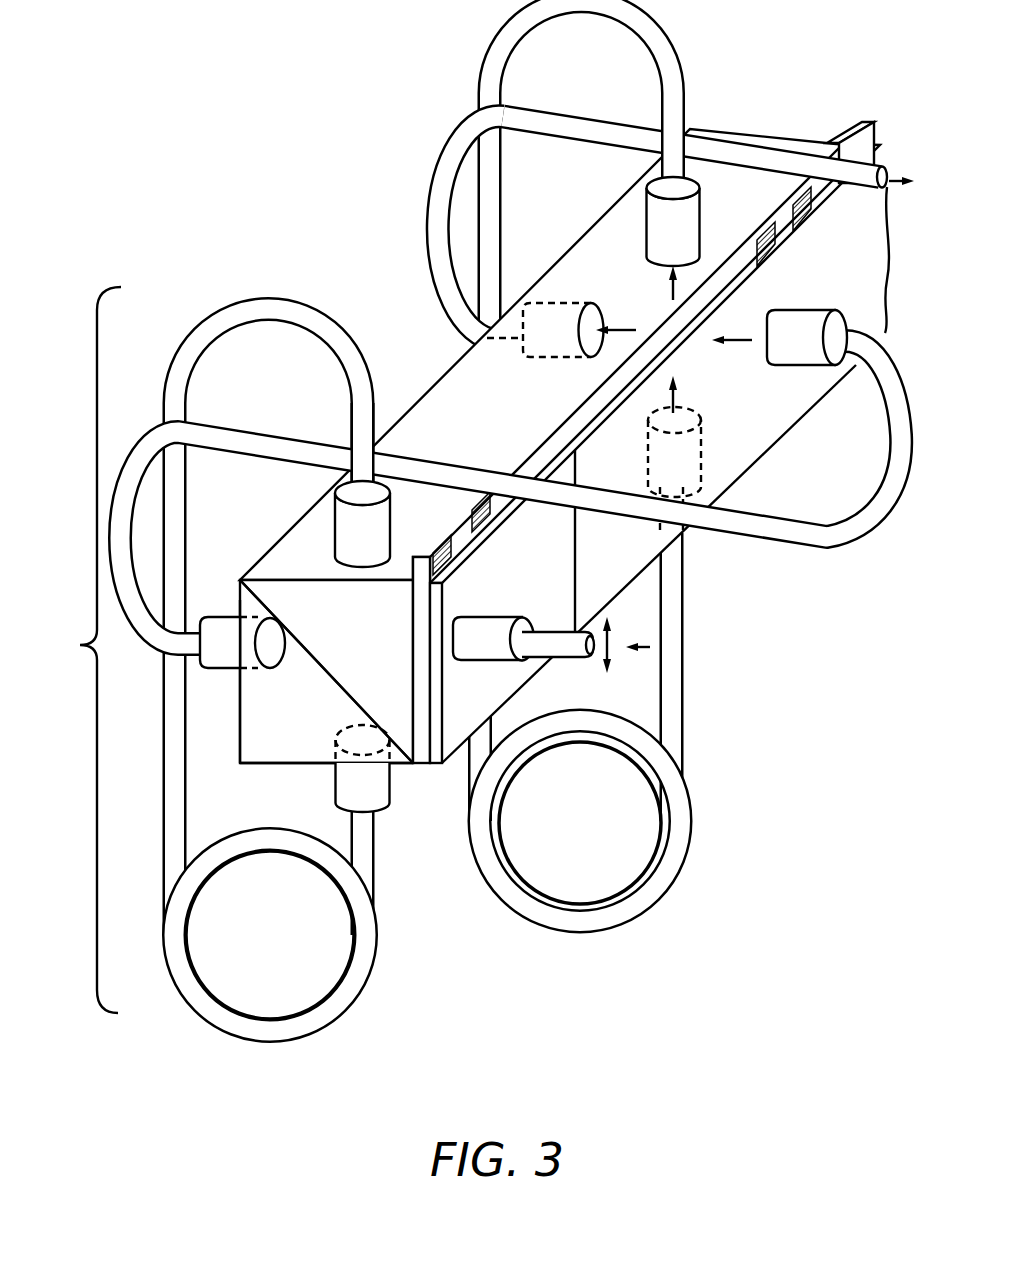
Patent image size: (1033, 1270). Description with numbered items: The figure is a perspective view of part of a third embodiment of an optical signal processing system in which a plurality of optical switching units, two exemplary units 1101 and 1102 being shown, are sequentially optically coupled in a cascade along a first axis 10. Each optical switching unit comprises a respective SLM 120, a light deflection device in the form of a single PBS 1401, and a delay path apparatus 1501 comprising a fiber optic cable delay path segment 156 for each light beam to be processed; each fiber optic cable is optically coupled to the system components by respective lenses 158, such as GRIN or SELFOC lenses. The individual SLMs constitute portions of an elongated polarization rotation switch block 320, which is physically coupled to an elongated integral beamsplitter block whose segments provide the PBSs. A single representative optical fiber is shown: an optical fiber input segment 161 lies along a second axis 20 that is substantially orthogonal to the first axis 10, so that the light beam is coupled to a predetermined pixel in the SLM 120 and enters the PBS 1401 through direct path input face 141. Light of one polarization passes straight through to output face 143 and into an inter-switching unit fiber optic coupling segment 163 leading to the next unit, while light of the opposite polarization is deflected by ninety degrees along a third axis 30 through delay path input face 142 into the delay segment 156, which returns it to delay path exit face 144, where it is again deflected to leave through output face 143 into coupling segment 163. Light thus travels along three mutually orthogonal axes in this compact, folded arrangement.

The first axis 10 is at (665, 415).
The second axis 20 is at (562, 702).
The third axis 30 is at (366, 252).
The SLM 120 is at (560, 446).
The optical switching unit 1101 is at (598, 381).
The optical switching unit 1102 is at (512, 328).
The PBS 1401 is at (311, 636).
The direct path input face 141 is at (356, 703).
The delay path input face 142 is at (249, 593).
The output face 143 is at (216, 681).
The delay path exit face 144 is at (313, 784).
The delay path apparatus 1501 is at (71, 650).
The fiber optic cable delay path segment 156 is at (250, 666).
The lenses 158 is at (519, 494).
The optical fiber input segment 161 is at (586, 653).
The inter-switching unit fiber optic coupling segment 163 is at (510, 492).
The polarization rotation switch block 320 is at (822, 115).